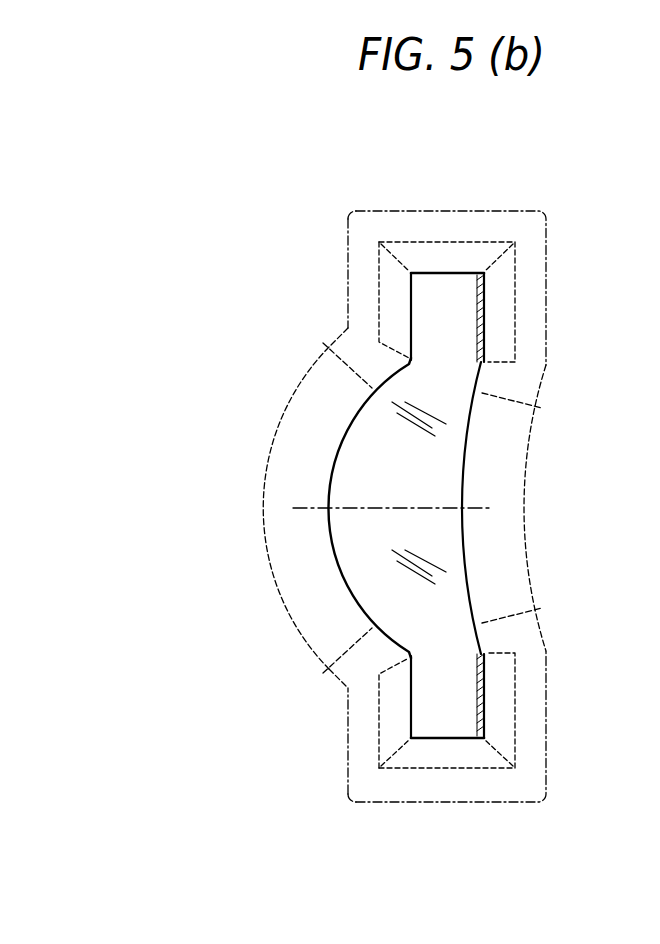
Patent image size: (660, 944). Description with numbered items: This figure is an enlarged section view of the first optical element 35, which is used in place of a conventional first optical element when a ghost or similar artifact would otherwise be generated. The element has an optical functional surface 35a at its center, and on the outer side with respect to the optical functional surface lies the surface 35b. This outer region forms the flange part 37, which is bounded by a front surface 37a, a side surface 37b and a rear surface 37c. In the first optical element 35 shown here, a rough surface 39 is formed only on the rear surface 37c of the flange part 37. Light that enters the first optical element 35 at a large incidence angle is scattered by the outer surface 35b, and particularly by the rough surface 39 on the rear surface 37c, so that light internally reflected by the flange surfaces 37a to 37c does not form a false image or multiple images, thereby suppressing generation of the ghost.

The first optical element 35 is at (316, 229).
The optical functional surface 35a is at (526, 546).
The surface located on the outer side 35b is at (449, 211).
The flange part 37 is at (430, 284).
The front surface of flange part 37a is at (380, 284).
The side surface of flange part 37b is at (497, 242).
The rear surface of flange part 37c is at (517, 305).
The rough surface 39 is at (486, 352).